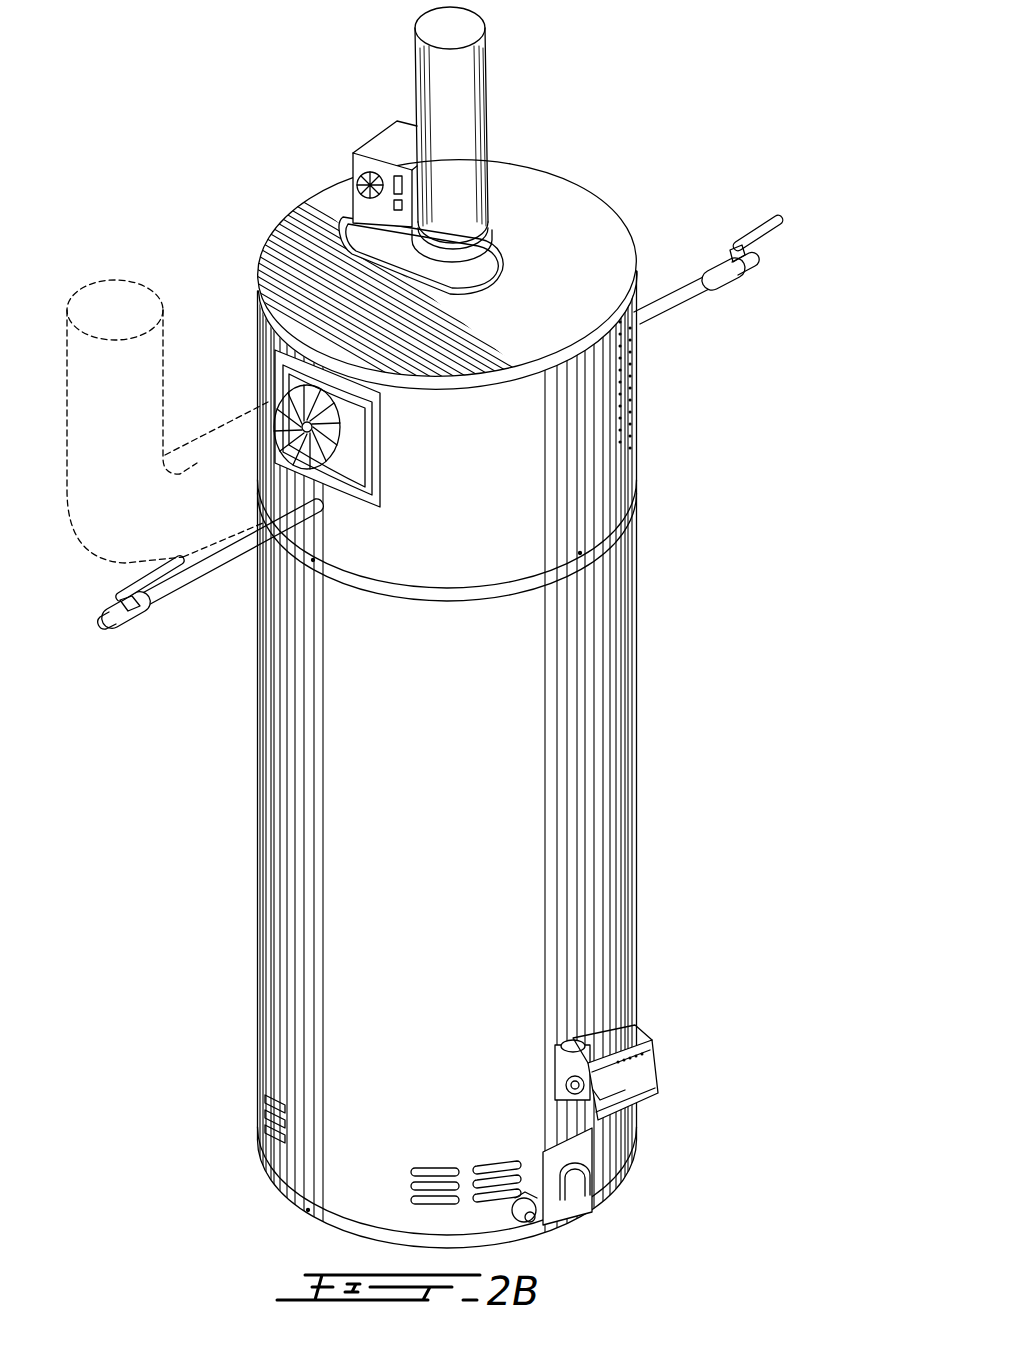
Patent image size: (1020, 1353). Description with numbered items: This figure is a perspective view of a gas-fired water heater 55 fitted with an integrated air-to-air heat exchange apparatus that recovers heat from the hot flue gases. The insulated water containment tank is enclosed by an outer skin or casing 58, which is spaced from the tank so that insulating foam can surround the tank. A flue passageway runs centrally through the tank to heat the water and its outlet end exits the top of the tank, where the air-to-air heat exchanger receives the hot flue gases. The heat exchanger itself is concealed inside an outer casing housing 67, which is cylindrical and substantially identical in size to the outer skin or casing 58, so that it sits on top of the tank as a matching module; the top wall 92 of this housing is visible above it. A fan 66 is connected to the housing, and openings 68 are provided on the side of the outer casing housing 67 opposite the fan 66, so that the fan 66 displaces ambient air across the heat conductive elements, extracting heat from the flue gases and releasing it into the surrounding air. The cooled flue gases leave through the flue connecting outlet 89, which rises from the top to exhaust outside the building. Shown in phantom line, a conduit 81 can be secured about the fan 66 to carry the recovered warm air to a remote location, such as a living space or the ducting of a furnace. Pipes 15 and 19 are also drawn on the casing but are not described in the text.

The gas-fired water heater 55 is at (436, 653).
The outer skin or casing 58 is at (568, 680).
The outer casing housing 67 is at (560, 490).
The openings 68 is at (633, 383).
The top wall 92 is at (555, 240).
The flue connecting outlet 89 is at (457, 75).
The fan 66 is at (330, 450).
The cold water inlet pipe 19 is at (213, 568).
The hot water outlet pipe 15 is at (688, 300).
The conduit 81 is at (145, 380).